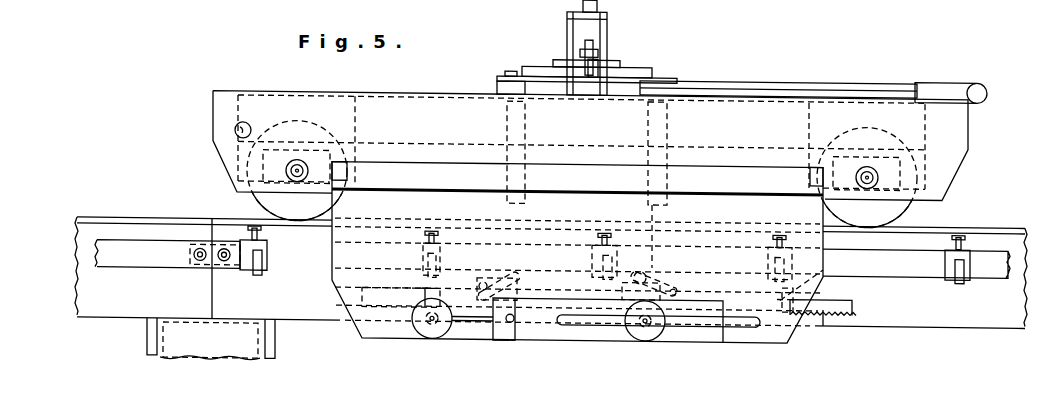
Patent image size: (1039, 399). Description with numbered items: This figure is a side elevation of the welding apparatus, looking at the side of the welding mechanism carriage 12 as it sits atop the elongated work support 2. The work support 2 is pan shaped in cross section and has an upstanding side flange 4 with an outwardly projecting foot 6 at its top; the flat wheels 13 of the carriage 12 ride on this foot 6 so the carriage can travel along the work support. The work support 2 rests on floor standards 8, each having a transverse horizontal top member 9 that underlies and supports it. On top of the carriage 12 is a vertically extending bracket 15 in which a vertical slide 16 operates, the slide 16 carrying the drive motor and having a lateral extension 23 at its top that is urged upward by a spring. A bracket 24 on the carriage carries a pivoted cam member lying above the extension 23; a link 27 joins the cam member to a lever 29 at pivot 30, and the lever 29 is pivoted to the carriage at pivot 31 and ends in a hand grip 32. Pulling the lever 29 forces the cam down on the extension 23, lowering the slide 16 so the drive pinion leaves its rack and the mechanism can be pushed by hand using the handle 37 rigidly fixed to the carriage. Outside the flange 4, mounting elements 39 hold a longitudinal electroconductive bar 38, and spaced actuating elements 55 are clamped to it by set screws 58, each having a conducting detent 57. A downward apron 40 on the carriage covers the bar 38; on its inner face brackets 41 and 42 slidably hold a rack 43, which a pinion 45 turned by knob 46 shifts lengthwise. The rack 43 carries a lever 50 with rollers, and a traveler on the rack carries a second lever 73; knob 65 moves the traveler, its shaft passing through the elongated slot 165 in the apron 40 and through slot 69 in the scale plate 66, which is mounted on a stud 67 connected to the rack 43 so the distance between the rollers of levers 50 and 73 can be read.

The work support 2 is at (975, 316).
The side flange 4 is at (80, 289).
The foot 6 is at (134, 214).
The standard 8 is at (160, 341).
The top member 9 is at (248, 327).
The carriage 12 is at (955, 160).
The flat wheels 13 is at (262, 197).
The bracket 15 is at (505, 113).
The vertical slide 16 is at (655, 70).
The lateral extension 23 is at (620, 55).
The bracket 24 is at (567, 21).
The link 27 is at (596, 43).
The lever 29 is at (630, 72).
The pivot 30 is at (583, 58).
The pivot 31 is at (507, 66).
The hand grip 32 is at (940, 74).
The handle 37 is at (235, 128).
The bar 38 is at (137, 262).
The mounting elements 39 is at (200, 262).
The apron 40 is at (733, 196).
The bracket 41 is at (823, 252).
The bracket 42 is at (410, 280).
The rack 43 is at (850, 288).
The pinion 45 is at (445, 328).
The knob 46 is at (415, 327).
The lever 50 is at (497, 268).
The actuating elements 55 is at (268, 259).
The detent 57 is at (257, 269).
The set screw 58 is at (262, 229).
The knob 65 is at (632, 322).
The plate 66 is at (723, 326).
The stud 67 is at (513, 313).
The slot 69 is at (690, 314).
The lever 73 is at (665, 272).
The elongated slot 165 is at (480, 319).